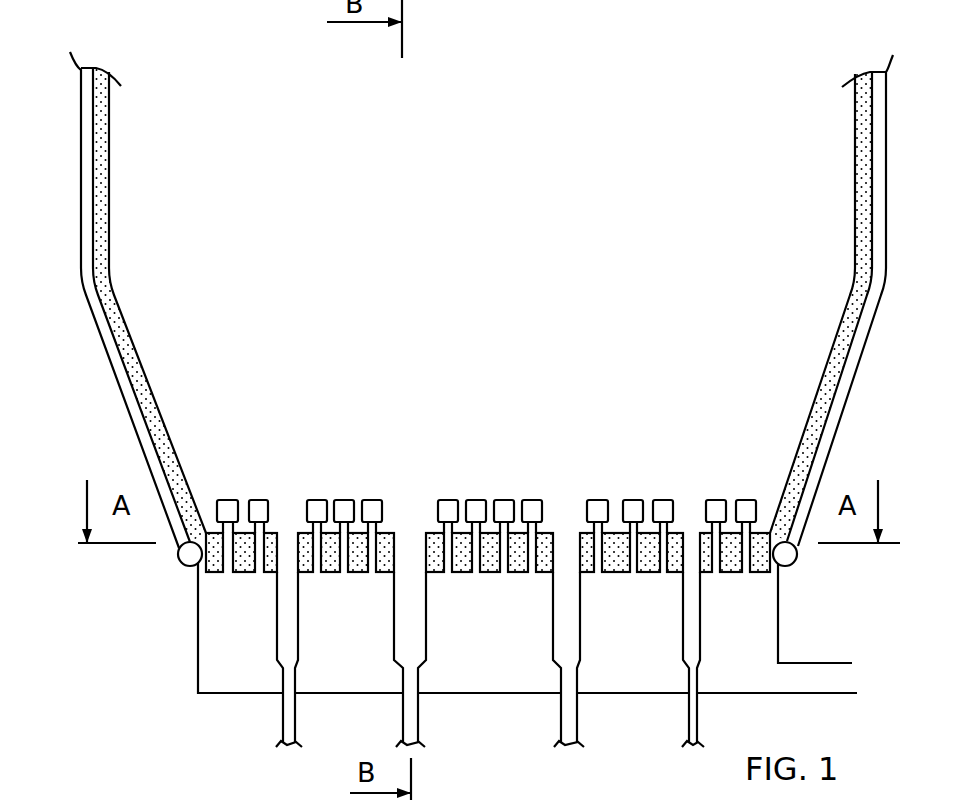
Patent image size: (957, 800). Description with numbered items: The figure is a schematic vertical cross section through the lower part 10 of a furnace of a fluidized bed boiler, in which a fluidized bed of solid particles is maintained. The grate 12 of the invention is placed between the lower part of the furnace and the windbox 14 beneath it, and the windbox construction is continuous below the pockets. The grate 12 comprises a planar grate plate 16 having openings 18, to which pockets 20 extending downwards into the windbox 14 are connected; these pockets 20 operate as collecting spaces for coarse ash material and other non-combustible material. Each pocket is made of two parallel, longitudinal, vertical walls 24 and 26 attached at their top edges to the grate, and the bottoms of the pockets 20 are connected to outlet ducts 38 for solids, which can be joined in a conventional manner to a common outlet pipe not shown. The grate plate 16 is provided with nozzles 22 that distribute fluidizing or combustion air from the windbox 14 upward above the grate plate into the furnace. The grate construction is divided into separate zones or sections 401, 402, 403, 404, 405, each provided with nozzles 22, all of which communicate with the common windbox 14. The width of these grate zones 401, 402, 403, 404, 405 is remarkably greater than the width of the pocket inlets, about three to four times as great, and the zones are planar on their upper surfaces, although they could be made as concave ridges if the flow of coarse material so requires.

The lower part of a furnace 10 is at (483, 280).
The grate 12 is at (678, 403).
The windbox 14 is at (228, 663).
The grate plate 16 is at (238, 573).
The openings 18 is at (565, 530).
The pockets 20 is at (692, 608).
The nozzles 22 is at (222, 500).
The longitudinal vertical wall 24 is at (388, 595).
The longitudinal vertical wall 26 is at (428, 595).
The outlet ducts 38 is at (698, 717).
The grate zone 401 is at (242, 488).
The grate zone 402 is at (347, 488).
The grate zone 403 is at (478, 488).
The grate zone 404 is at (623, 488).
The grate zone 405 is at (727, 488).